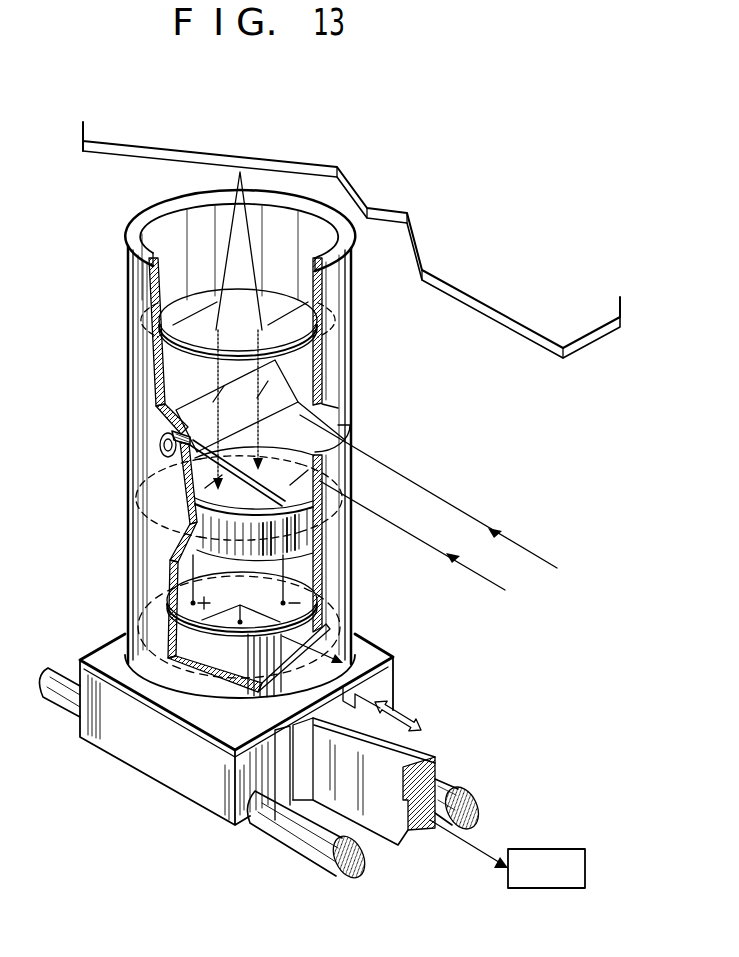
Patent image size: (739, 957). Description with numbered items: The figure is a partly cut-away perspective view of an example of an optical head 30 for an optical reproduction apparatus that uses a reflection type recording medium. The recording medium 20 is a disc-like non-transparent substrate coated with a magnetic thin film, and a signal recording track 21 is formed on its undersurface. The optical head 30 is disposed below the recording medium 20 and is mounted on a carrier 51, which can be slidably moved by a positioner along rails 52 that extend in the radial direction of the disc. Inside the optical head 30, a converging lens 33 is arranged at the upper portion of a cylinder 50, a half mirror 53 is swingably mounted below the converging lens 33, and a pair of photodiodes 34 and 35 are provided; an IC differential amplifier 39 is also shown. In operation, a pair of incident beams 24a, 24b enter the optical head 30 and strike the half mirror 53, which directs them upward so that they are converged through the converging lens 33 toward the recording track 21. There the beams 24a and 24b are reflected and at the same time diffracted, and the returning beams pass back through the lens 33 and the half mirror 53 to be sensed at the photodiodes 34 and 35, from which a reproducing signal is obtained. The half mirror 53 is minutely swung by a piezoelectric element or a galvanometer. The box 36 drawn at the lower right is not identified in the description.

The recording medium 20 is at (502, 355).
The signal recording track 21 is at (243, 172).
The optical head 30 is at (134, 234).
The converging lens 33 is at (288, 302).
The photodiode 34 is at (295, 472).
The photodiode 35 is at (178, 474).
The signal processing circuit 36 is at (541, 889).
The IC differential amplifier 39 is at (140, 618).
The cylinder 50 is at (140, 372).
The carrier 51 is at (128, 752).
The rails 52 is at (447, 779).
The half mirror 53 is at (174, 430).
The incident beam 24a is at (431, 547).
The incident beam 24b is at (466, 512).